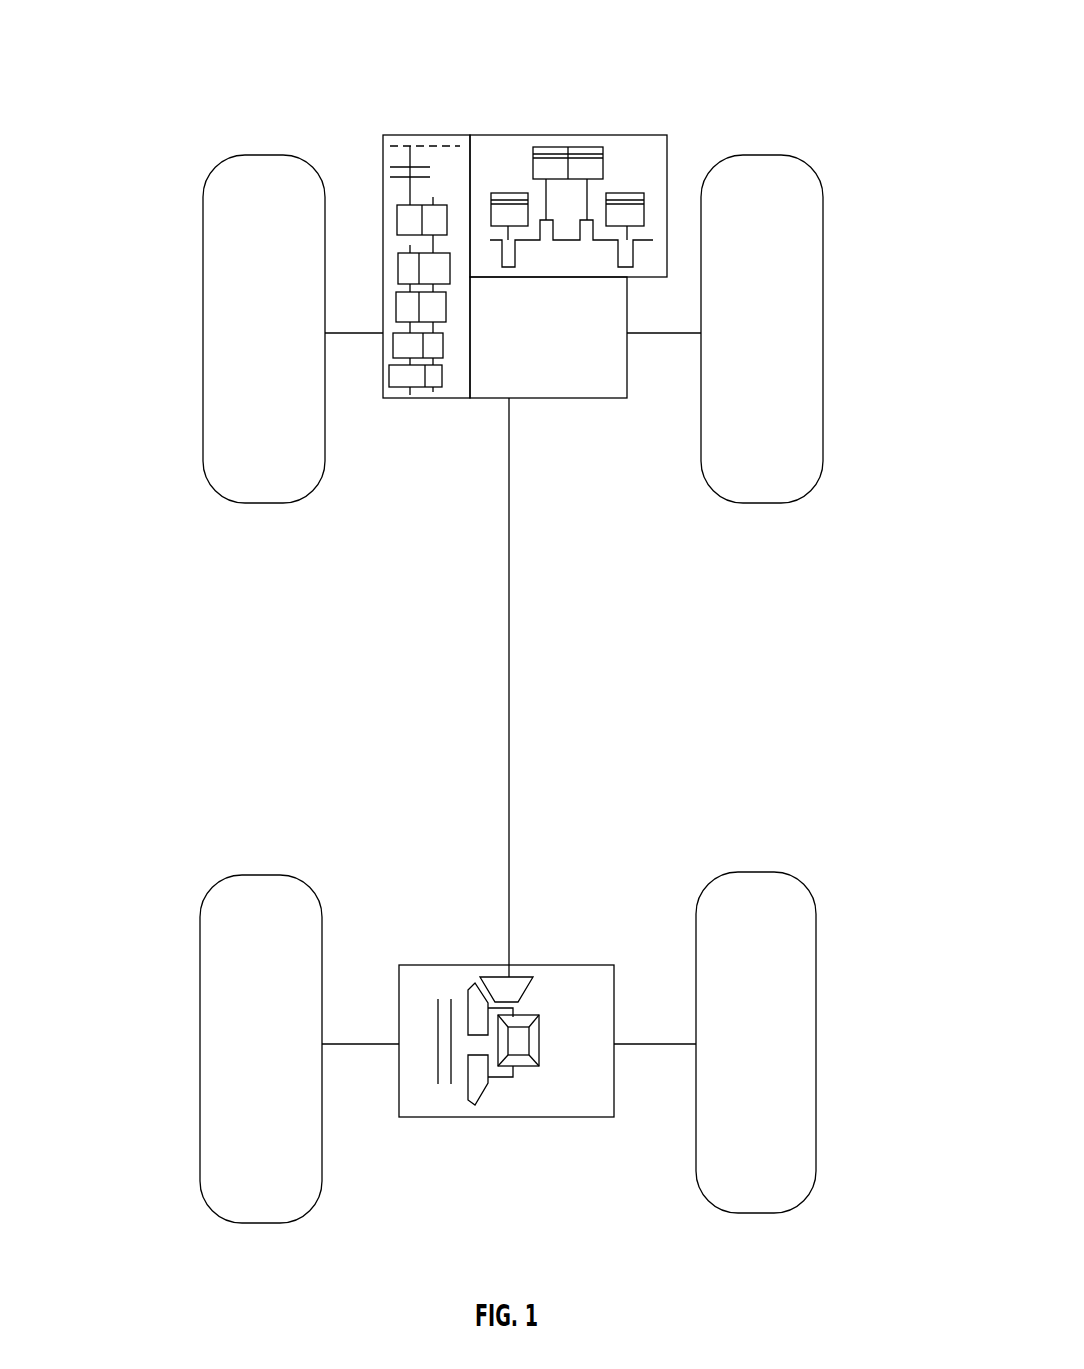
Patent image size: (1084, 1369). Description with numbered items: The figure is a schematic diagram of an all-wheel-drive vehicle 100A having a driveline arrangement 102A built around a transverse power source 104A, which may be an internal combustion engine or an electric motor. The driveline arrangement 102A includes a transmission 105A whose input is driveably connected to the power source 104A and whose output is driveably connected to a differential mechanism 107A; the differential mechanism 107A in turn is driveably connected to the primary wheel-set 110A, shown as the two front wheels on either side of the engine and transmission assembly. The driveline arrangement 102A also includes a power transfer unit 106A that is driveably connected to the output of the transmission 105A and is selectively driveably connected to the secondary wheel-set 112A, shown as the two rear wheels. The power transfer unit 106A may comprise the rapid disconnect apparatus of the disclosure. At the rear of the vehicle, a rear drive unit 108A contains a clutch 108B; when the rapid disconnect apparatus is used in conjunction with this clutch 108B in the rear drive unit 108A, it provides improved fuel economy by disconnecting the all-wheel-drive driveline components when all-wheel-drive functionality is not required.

The AWD vehicle 100A is at (743, 92).
The driveline arrangement 102A is at (705, 660).
The transverse power source 104A is at (635, 160).
The transmission 105A is at (430, 145).
The power transfer unit 106A is at (626, 402).
The differential mechanism 107A is at (567, 375).
The rear drive unit 108A is at (585, 980).
The clutch 108B is at (444, 993).
The primary wheel-set 110A is at (235, 251).
The secondary wheel-set 112A is at (233, 935).